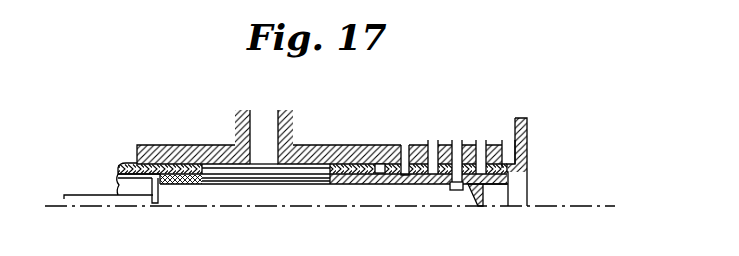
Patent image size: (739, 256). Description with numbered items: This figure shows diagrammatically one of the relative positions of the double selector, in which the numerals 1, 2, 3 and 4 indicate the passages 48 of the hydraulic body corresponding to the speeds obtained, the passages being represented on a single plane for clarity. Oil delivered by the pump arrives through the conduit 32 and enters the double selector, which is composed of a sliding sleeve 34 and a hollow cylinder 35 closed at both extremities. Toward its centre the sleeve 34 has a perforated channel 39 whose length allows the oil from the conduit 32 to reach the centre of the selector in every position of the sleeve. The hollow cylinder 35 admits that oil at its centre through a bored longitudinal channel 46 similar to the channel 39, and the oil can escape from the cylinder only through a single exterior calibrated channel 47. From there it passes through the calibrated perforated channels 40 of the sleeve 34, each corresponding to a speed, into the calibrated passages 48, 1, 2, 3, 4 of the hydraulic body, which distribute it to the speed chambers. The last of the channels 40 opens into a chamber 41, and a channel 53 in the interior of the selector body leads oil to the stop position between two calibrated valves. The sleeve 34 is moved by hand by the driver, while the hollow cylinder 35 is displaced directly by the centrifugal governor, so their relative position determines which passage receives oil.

The conduit 32 is at (262, 126).
The perforated channel 39 is at (210, 163).
The sliding sleeve 34 is at (351, 165).
The perforated channels 40 is at (381, 166).
The first speed passage 1 is at (433, 153).
The second speed passage 2 is at (457, 156).
The third speed passage 3 is at (481, 152).
The fourth speed passage 4 is at (508, 149).
The passages 48 is at (503, 153).
The channel 53 is at (398, 175).
The bored longitudinal channel 46 is at (233, 179).
The hollow cylinder 35 is at (176, 198).
The exterior calibrated channel 47 is at (455, 191).
The chamber 41 is at (484, 192).